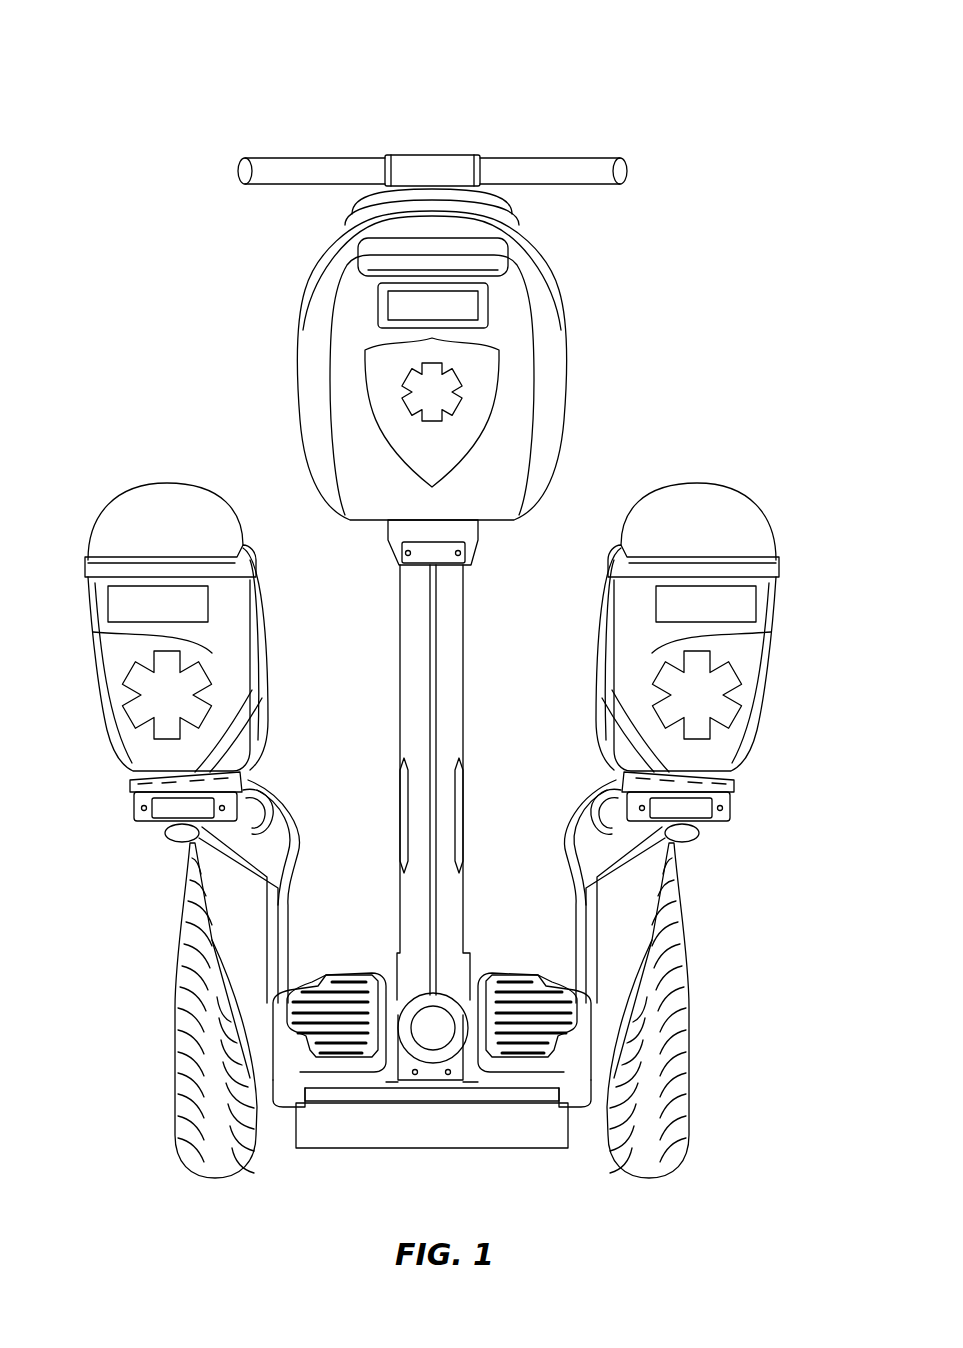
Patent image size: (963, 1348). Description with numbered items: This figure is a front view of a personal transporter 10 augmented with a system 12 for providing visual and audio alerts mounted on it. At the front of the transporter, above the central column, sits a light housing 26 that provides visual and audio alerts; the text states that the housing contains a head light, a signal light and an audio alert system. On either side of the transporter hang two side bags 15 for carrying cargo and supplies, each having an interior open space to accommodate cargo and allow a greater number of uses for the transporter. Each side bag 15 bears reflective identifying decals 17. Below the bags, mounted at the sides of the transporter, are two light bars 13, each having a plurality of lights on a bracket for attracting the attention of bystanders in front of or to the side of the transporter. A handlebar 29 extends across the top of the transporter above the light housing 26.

The personal transporter 10 is at (246, 62).
The system 12 is at (676, 405).
The light bar 13 is at (133, 818).
The side bag 15 is at (110, 528).
The reflective identifying decal 17 is at (480, 400).
The light housing 26 is at (318, 303).
The handlebar 29 is at (595, 167).